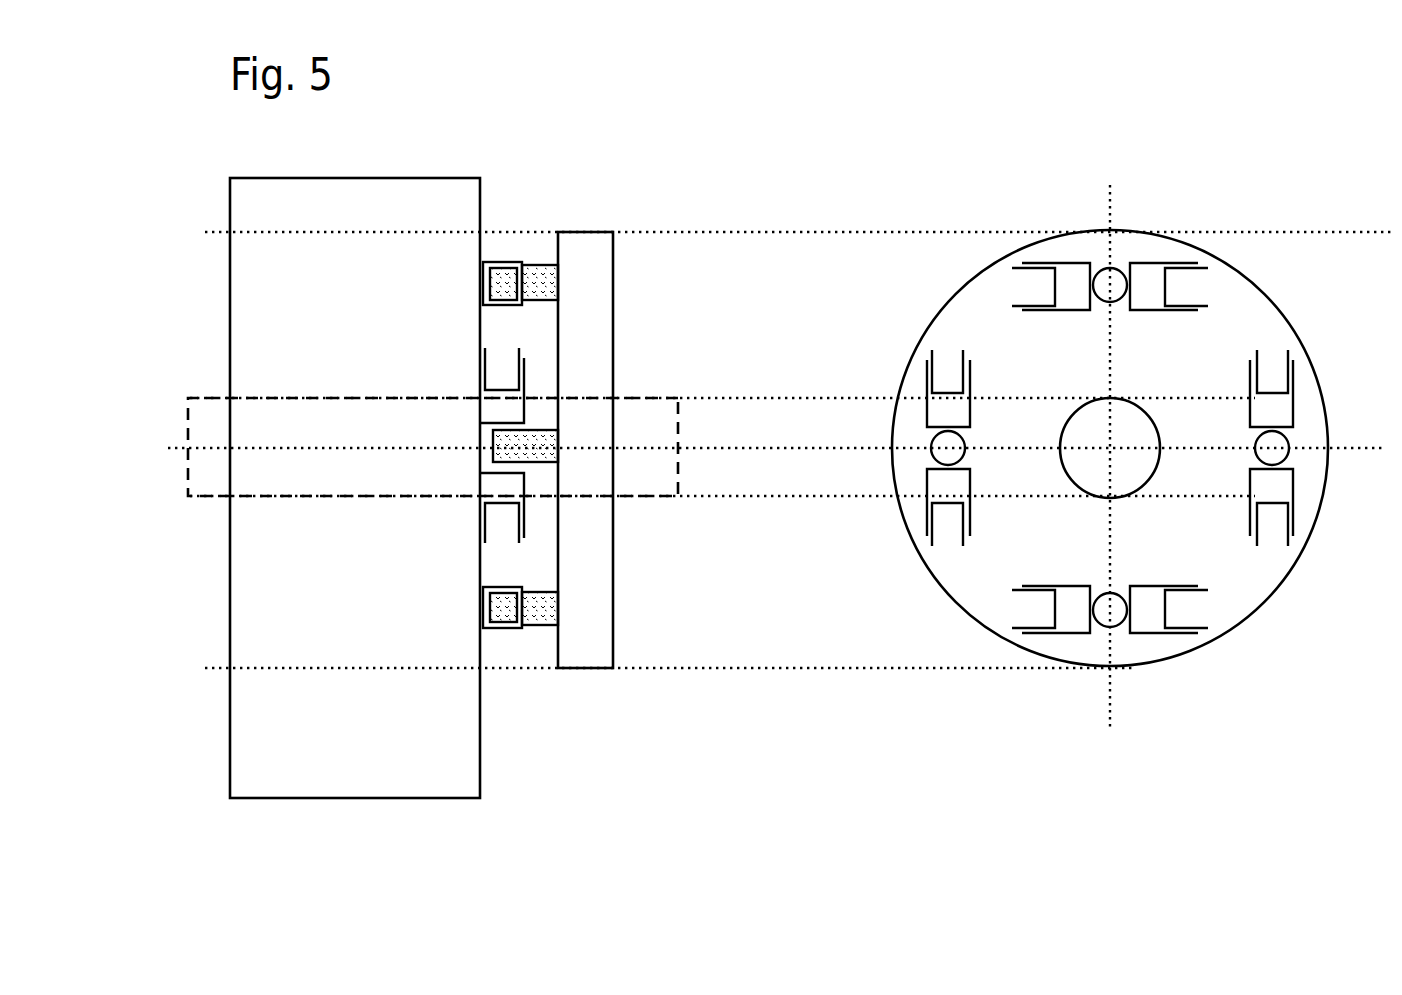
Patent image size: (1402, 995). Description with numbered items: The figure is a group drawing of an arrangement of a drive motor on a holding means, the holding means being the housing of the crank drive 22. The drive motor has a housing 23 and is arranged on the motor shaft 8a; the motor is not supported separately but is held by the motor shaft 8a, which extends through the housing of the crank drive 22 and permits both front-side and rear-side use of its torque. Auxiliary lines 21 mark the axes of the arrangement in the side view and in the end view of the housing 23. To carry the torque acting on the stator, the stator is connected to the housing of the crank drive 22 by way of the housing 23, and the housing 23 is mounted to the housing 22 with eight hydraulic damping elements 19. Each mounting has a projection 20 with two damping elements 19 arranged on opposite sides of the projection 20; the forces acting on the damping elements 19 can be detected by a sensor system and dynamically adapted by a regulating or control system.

The motor shaft 8a is at (210, 427).
The damping element 19 is at (714, 445).
The projection 20 is at (538, 630).
The auxiliary line 21 is at (800, 230).
The housing of the crank drive 22 is at (433, 732).
The housing of the drive motor 23 is at (593, 265).